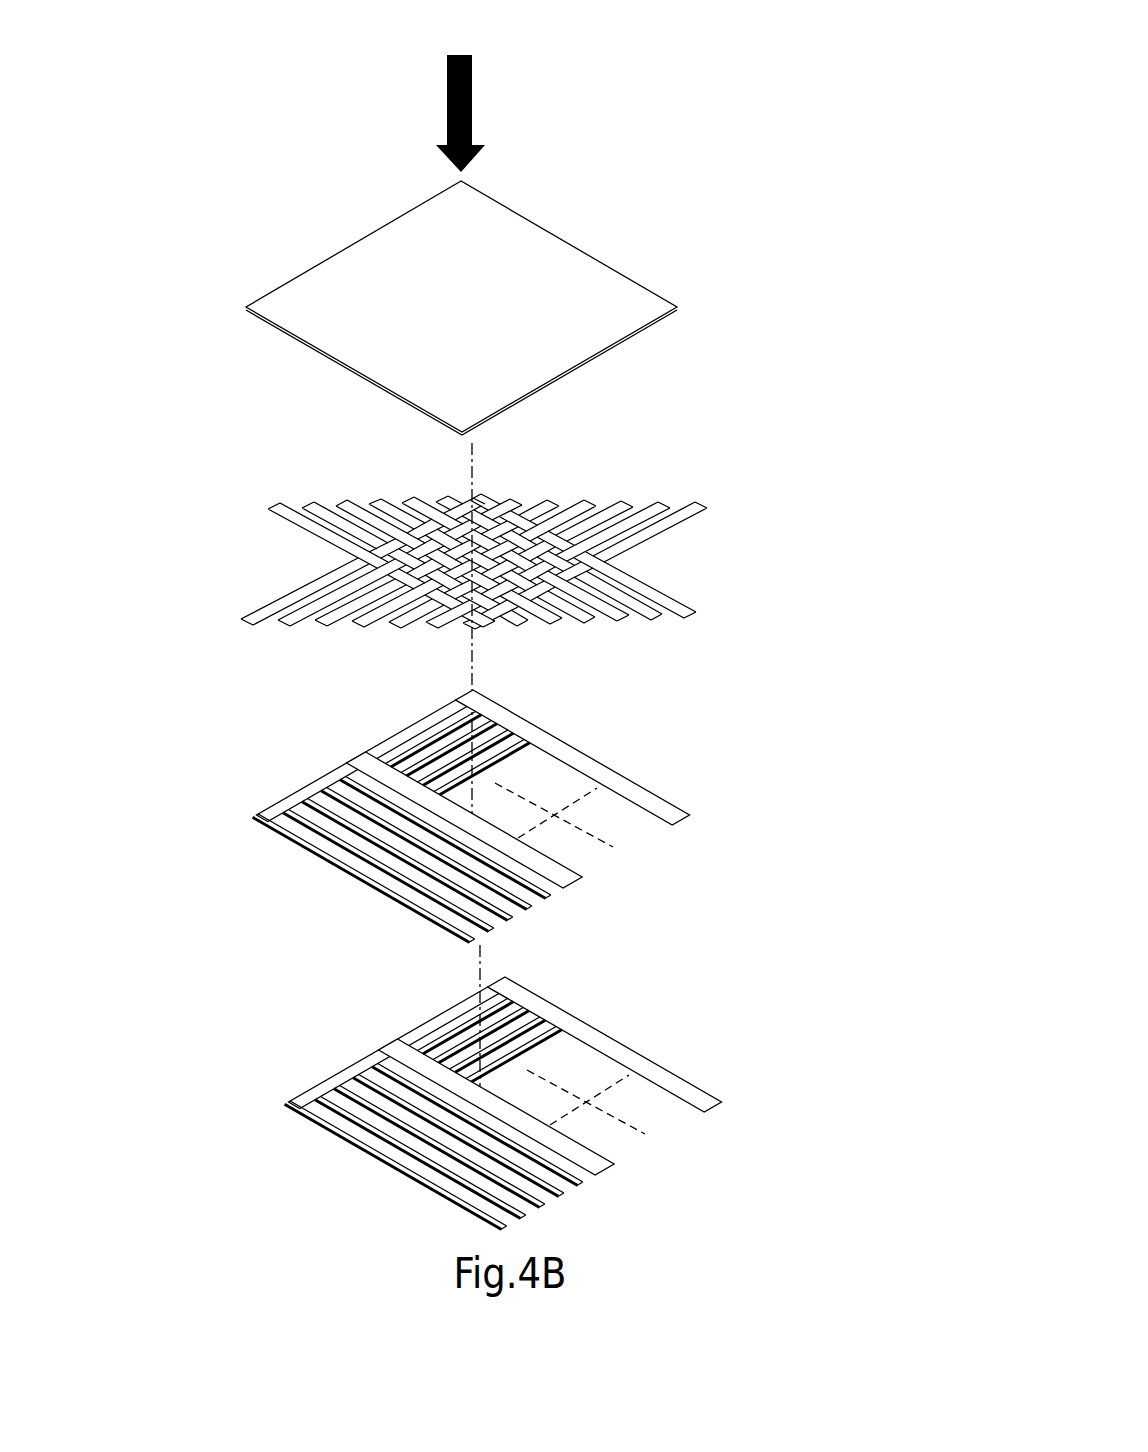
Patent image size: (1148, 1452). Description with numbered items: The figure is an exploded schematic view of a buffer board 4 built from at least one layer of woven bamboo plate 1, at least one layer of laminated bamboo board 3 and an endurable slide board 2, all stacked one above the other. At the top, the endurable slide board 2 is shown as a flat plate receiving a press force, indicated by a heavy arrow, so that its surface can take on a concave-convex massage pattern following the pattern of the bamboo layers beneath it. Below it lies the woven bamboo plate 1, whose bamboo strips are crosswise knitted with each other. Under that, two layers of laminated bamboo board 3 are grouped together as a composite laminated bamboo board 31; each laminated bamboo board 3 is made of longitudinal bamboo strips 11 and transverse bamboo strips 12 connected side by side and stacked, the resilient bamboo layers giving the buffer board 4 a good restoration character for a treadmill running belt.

The buffer board 4 is at (501, 620).
The endurable slide board 2 is at (624, 307).
The woven bamboo plate 1 is at (524, 495).
The composite laminated bamboo board 31 is at (557, 949).
The laminated bamboo board 3 is at (511, 951).
The longitudinal bamboo strip 11 is at (372, 891).
The transverse bamboo strip 12 is at (410, 1004).